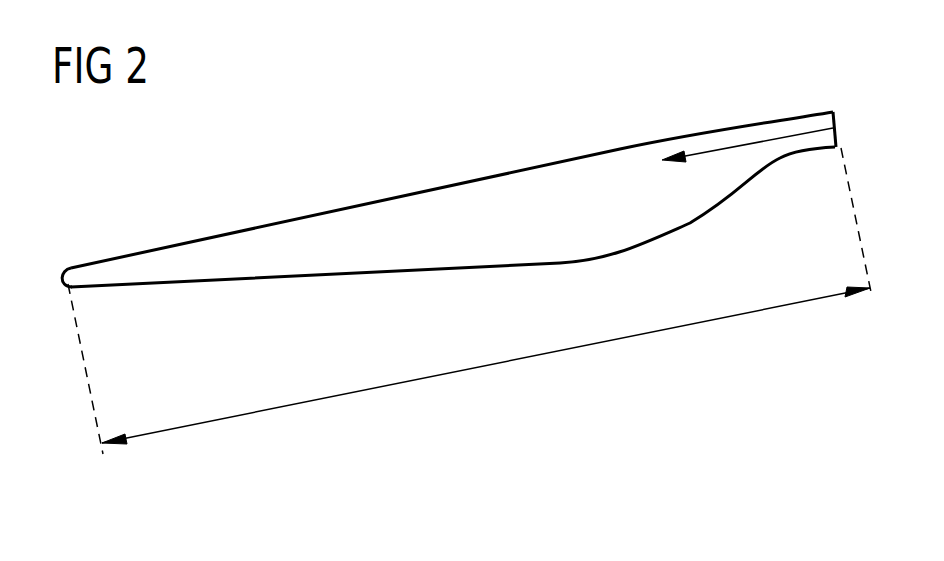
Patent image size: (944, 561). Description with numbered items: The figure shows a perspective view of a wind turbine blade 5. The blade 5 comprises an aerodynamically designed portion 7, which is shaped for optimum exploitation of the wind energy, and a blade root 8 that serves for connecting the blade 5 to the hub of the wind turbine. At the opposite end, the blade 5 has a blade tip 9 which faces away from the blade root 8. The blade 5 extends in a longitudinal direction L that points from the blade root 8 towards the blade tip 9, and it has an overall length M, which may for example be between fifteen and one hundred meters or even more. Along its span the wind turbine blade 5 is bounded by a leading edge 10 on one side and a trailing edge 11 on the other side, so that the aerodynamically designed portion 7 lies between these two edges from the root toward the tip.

The blade 5 is at (442, 200).
The aerodynamically designed portion 7 is at (138, 265).
The blade root 8 is at (823, 121).
The blade tip 9 is at (70, 281).
The leading edge 10 is at (299, 214).
The trailing edge 11 is at (287, 279).
The longitudinal direction L is at (735, 147).
The length M is at (245, 415).